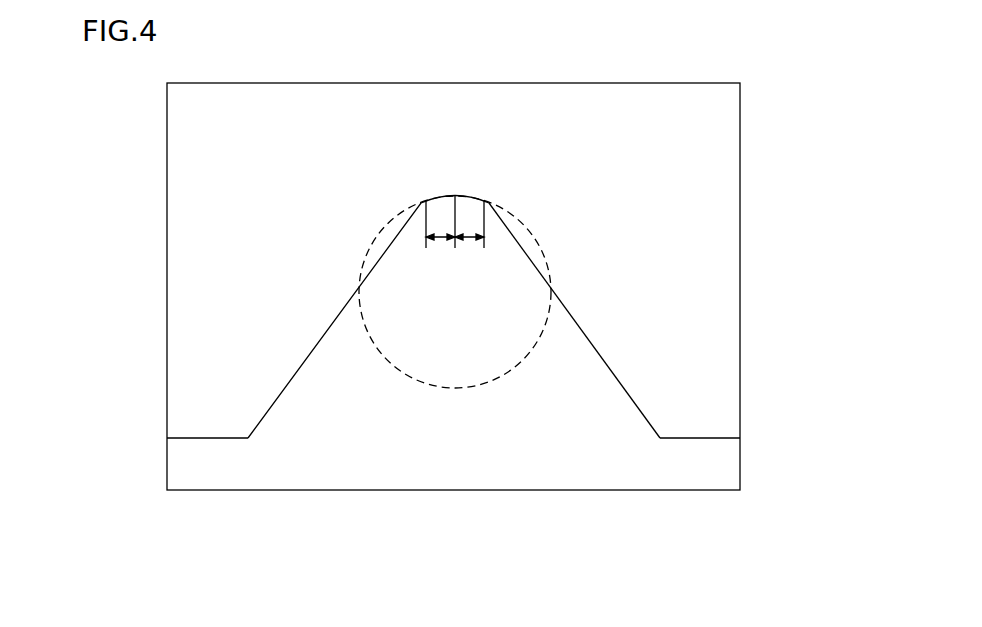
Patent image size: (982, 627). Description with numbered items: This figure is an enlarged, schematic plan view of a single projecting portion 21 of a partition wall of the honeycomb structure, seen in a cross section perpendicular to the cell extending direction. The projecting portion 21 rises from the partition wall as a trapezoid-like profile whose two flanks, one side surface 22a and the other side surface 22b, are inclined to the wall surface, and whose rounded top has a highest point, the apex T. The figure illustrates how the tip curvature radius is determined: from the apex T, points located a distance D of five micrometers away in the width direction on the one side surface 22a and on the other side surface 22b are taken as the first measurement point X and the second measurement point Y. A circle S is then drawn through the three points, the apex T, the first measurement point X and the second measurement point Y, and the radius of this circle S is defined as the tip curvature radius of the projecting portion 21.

The projecting portion 21 is at (528, 444).
The one side surface 22a is at (305, 357).
The other side surface 22b is at (620, 377).
The circle S is at (532, 230).
The apex T is at (455, 187).
The first measurement point X is at (484, 198).
The second measurement point Y is at (426, 198).
The distance D is at (455, 251).